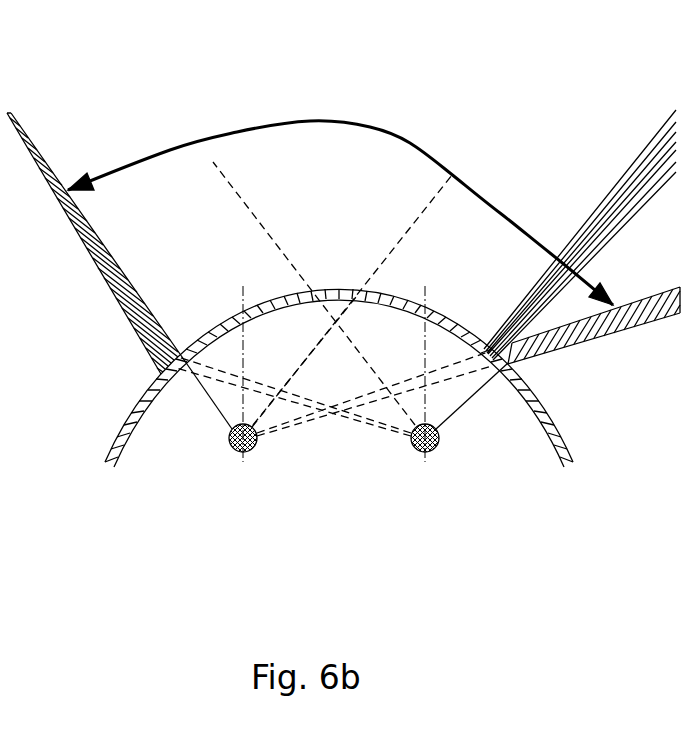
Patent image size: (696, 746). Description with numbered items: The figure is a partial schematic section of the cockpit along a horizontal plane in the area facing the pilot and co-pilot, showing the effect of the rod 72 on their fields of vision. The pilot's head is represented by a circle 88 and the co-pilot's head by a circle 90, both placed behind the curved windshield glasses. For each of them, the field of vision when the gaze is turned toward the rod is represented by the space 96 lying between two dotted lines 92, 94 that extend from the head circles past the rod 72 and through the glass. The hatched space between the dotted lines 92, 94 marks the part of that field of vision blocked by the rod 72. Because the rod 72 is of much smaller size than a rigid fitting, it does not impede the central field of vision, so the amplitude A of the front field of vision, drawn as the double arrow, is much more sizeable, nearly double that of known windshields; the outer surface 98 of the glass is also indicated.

The rod 72 is at (318, 303).
The outer surface of dome 98 is at (356, 290).
The space 96 is at (267, 410).
The dotted line 92 is at (282, 383).
The dotted line 94 is at (312, 360).
The circle 88 is at (242, 458).
The circle 90 is at (425, 458).
The amplitude A is at (340, 192).